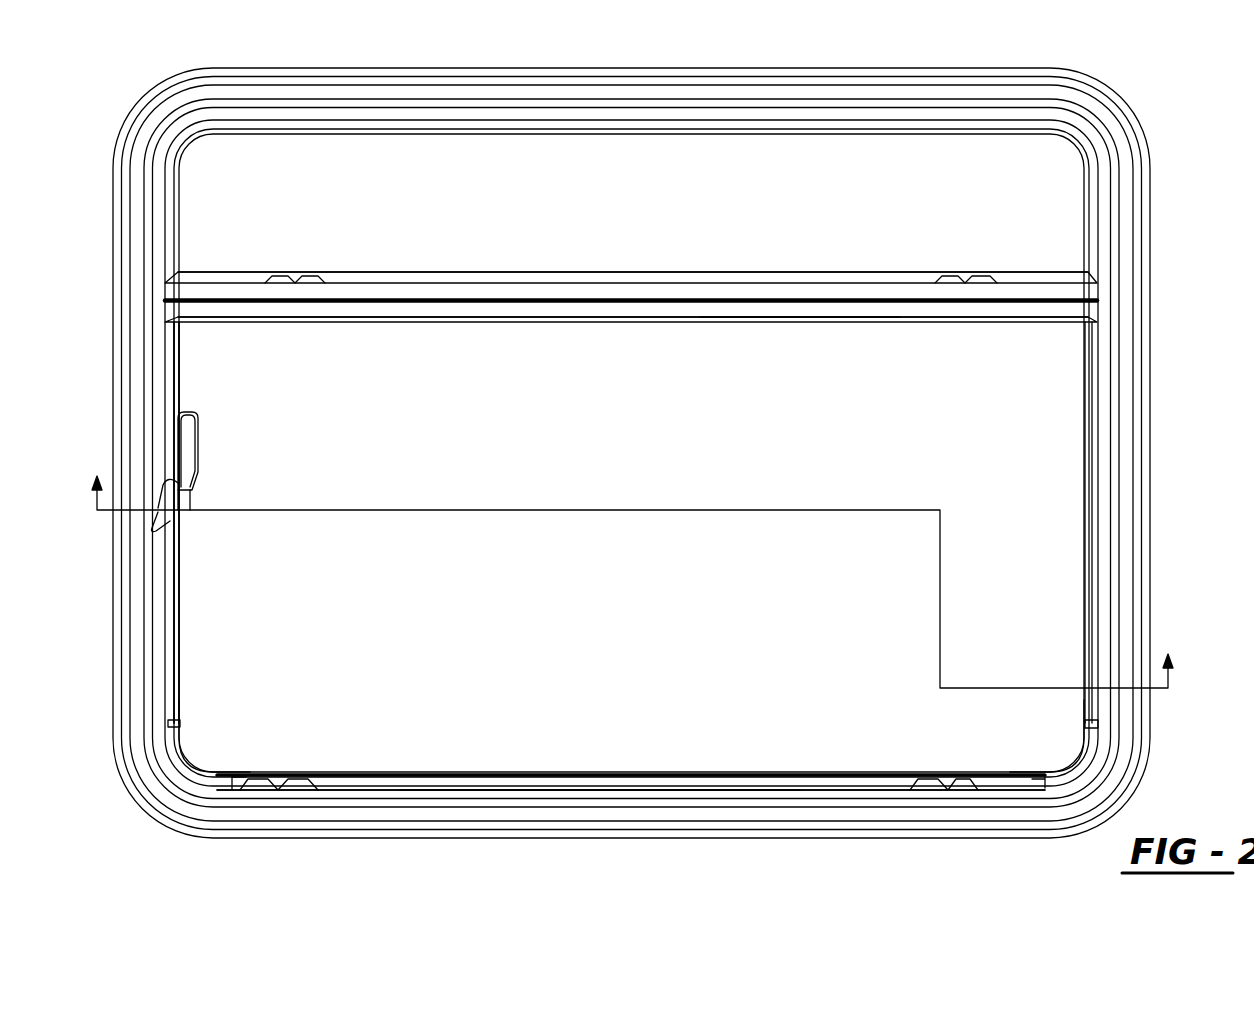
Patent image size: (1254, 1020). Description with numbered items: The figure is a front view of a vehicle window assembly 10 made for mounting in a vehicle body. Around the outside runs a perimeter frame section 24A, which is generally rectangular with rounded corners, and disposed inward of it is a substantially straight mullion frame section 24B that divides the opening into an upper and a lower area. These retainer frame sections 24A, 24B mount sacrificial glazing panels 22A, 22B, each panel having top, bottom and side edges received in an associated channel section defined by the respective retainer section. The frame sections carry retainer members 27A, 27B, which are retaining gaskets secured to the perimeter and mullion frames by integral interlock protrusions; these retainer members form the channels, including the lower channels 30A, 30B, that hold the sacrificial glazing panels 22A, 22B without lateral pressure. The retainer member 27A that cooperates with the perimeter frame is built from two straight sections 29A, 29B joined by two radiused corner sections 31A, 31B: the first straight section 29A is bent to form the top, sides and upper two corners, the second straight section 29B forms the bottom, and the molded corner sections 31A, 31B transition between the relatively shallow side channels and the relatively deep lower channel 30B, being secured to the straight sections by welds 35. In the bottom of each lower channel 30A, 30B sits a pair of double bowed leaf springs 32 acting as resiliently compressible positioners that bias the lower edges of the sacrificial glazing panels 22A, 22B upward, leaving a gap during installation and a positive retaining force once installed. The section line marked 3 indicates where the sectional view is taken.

The vehicle window assembly 10 is at (858, 56).
The perimeter frame section 24A is at (386, 70).
The mullion frame section 24B is at (519, 318).
The sacrificial glazing panel 22A is at (682, 225).
The sacrificial glazing panel 22B is at (672, 473).
The lower channel 30A is at (398, 290).
The lower channel 30B is at (400, 318).
The retainer member 27A is at (596, 773).
The retainer member 27B is at (792, 320).
The first straight section 29A is at (181, 642).
The second straight section 29B is at (546, 771).
The radiused corner section 31A is at (188, 758).
The radiused corner section 31B is at (1066, 763).
The double bowed leaf spring 32 is at (305, 276).
The weld 35 is at (175, 720).
The section line 3- 3 is at (633, 562).